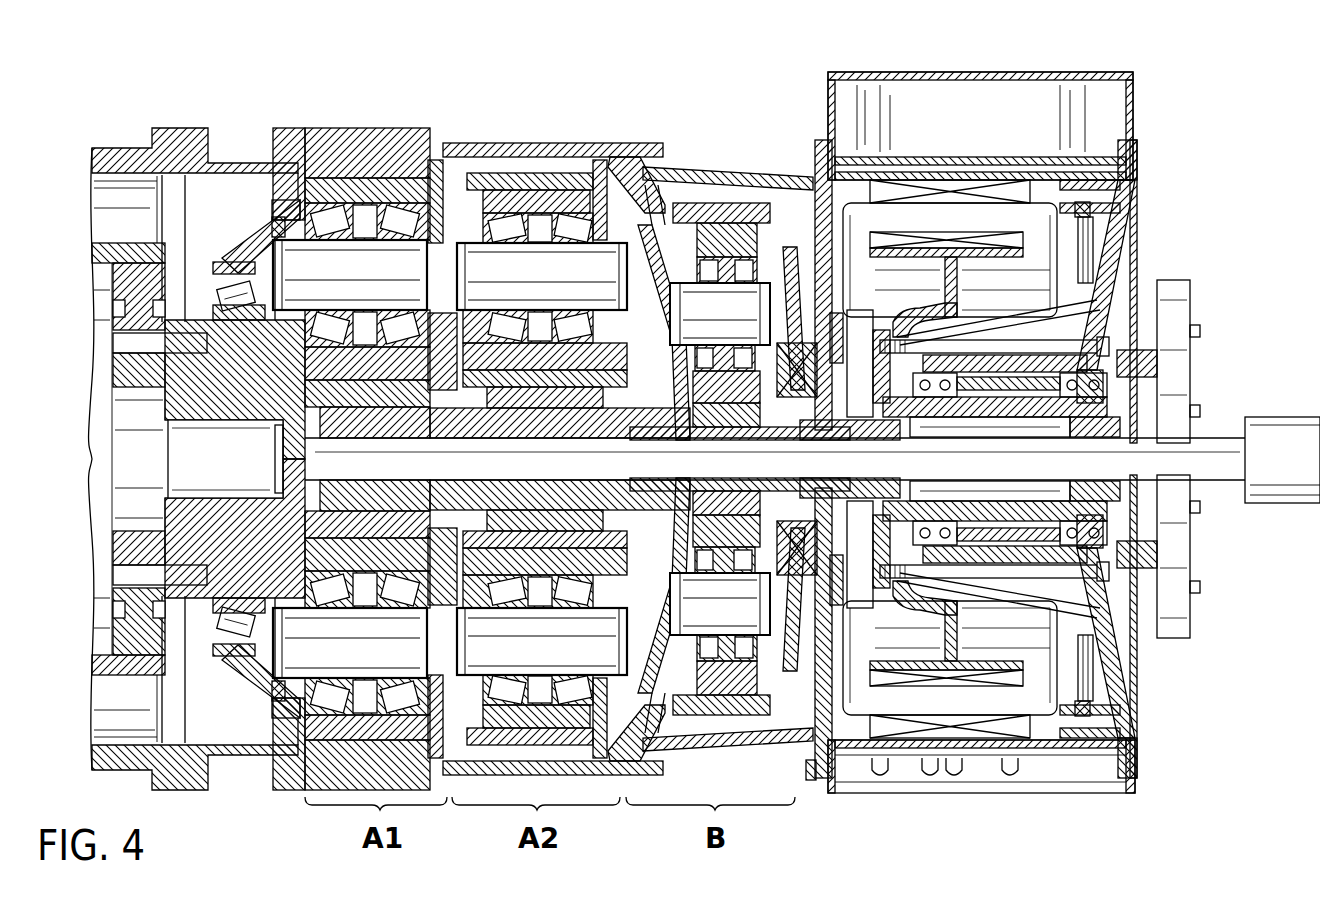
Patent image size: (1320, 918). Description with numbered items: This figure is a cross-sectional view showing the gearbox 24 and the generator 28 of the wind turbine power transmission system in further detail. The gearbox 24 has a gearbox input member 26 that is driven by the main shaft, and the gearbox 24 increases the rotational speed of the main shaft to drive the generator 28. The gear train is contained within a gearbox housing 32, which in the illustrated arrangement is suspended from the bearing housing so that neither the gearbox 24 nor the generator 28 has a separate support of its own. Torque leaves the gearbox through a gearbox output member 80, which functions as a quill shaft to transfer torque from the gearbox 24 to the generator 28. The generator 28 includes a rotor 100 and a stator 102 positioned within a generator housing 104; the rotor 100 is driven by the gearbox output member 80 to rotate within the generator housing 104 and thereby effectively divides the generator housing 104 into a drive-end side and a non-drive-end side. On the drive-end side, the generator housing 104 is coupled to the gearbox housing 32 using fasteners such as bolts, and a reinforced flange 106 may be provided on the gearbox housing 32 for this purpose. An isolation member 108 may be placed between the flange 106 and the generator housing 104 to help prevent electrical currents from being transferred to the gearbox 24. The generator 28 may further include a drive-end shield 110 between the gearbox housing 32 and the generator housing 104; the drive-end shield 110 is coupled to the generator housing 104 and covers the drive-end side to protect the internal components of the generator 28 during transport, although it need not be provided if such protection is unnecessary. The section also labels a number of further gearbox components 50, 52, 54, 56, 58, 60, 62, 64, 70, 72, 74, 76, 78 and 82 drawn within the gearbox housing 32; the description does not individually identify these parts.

The gearbox 24 is at (482, 138).
The gearbox input member 26 is at (185, 497).
The generator 28 is at (876, 72).
The gearbox housing 32 is at (525, 146).
The housing end wall 50 is at (315, 142).
The ring gear 52 is at (355, 145).
The output hub 54 is at (310, 388).
The splined bore 56 is at (300, 488).
The second ring gear 58 is at (562, 174).
The carrier plate 60 is at (603, 162).
The planet gear 62 is at (542, 276).
The planet gear 64 is at (553, 545).
The output bearing assembly 70 is at (712, 202).
The sun gear wall 72 is at (660, 195).
The sun gear wall 74 is at (683, 650).
The seal wall 76 is at (792, 248).
The bearing sleeve 78 is at (742, 411).
The gearbox output member 80 is at (707, 446).
The shaft collar 82 is at (724, 432).
The rotor 100 is at (1004, 262).
The stator 102 is at (1035, 188).
The generator housing 104 is at (940, 72).
The reinforced flange 106 is at (806, 775).
The isolation member 108 is at (812, 790).
The drive-end shield 110 is at (832, 796).